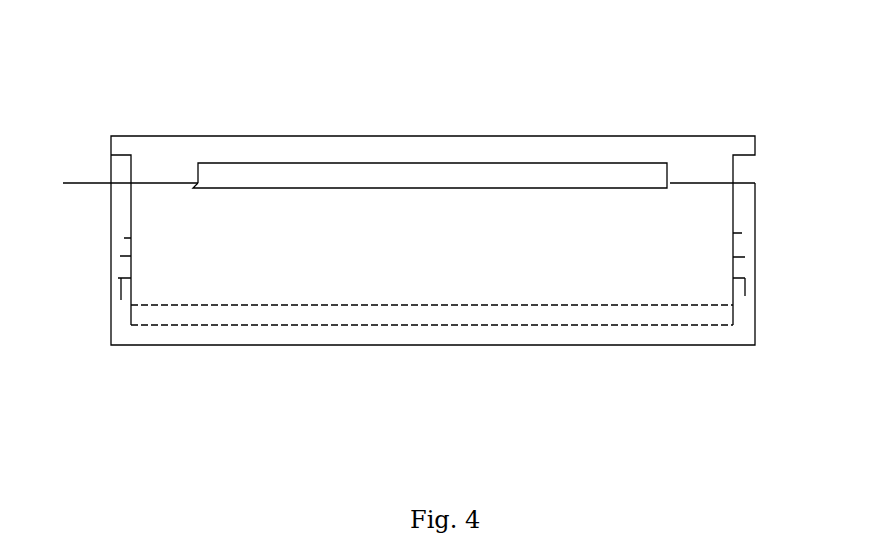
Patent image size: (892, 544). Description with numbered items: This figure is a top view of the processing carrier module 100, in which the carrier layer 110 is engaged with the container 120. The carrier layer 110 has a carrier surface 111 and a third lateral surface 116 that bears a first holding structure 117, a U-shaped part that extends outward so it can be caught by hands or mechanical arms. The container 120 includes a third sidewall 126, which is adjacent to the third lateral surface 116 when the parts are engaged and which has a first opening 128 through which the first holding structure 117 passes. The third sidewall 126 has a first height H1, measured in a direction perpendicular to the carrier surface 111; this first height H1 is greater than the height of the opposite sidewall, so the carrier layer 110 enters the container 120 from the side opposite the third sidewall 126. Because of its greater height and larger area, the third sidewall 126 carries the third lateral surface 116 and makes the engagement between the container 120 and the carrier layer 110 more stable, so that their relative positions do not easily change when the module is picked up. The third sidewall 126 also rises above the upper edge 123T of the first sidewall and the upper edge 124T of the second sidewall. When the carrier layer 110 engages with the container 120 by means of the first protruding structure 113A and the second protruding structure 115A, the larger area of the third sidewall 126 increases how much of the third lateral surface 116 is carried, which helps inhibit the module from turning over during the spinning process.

The processing carrier module 100 is at (125, 22).
The carrier layer 110 is at (428, 82).
The third lateral surface 116 is at (694, 159).
The first holding structure 117 is at (585, 162).
The first opening 128 is at (670, 190).
The third sidewall 126 is at (722, 206).
The container 120 is at (577, 354).
The carrier surface 111 is at (206, 304).
The upper edge of the second sidewall 124T is at (117, 243).
The second protruding structure 115A is at (121, 283).
The upper edge of the first sidewall 123T is at (745, 236).
The first protruding structure 113A is at (746, 296).
The first height H1 is at (67, 183).